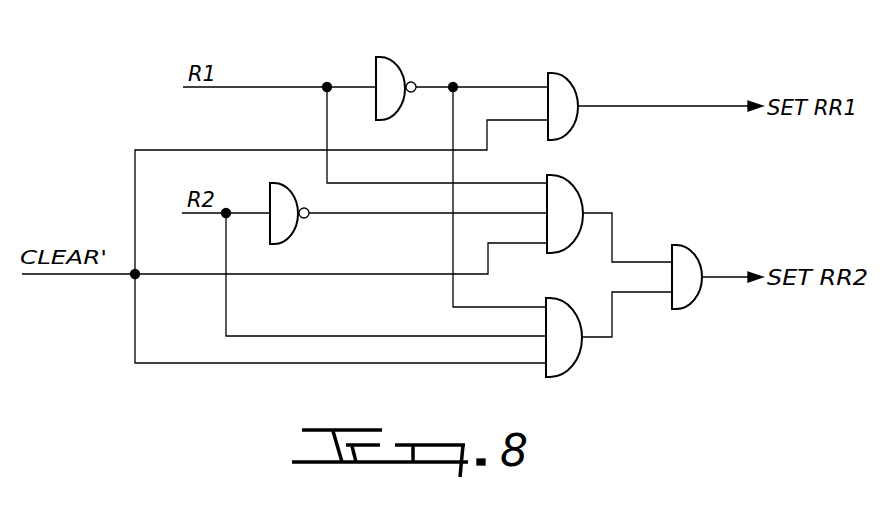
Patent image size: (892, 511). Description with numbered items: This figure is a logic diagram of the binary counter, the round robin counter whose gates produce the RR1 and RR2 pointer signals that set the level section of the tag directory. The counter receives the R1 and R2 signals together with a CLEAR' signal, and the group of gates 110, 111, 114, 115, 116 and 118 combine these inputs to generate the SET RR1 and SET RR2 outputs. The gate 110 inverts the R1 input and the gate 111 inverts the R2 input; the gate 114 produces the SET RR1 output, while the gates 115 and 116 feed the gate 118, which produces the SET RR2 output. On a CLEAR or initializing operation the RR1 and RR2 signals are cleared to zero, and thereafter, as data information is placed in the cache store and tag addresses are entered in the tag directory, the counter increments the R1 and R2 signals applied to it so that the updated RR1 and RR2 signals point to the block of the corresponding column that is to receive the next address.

The gate 110 is at (375, 63).
The gate 111 is at (289, 240).
The gate 114 is at (573, 90).
The gate 115 is at (579, 200).
The gate 116 is at (578, 356).
The gate 118 is at (693, 256).